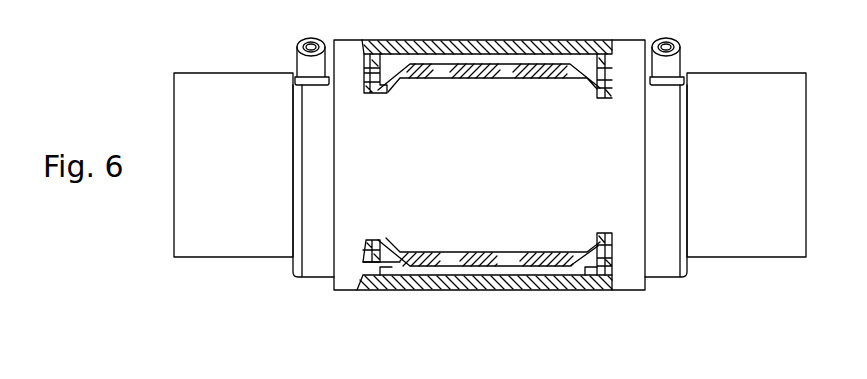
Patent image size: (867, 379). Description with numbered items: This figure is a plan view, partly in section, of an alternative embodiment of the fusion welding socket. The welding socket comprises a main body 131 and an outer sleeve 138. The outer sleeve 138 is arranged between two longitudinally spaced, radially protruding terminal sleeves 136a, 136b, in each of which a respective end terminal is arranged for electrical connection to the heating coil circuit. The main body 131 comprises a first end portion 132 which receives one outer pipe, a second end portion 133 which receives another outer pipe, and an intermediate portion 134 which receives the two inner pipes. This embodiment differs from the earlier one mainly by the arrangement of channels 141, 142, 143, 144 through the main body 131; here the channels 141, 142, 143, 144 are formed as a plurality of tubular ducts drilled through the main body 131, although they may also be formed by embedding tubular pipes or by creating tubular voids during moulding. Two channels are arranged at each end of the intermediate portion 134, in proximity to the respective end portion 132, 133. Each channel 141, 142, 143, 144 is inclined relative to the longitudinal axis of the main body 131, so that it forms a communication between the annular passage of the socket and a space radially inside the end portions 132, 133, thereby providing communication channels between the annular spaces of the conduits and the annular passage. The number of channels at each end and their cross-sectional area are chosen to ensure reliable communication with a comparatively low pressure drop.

The main body 131 is at (510, 248).
The first end portion 132 is at (372, 243).
The second end portion 133 is at (622, 253).
The intermediate portion 134 is at (448, 250).
The terminal sleeve 136a is at (685, 46).
The terminal sleeve 136b is at (299, 48).
The outer sleeve 138 is at (522, 292).
The channel 141 is at (391, 268).
The channel 142 is at (383, 58).
The channel 143 is at (591, 275).
The channel 144 is at (602, 66).